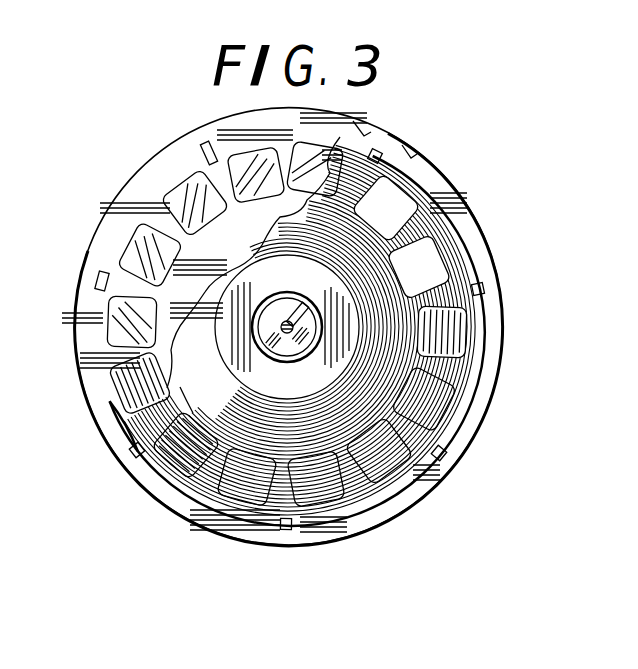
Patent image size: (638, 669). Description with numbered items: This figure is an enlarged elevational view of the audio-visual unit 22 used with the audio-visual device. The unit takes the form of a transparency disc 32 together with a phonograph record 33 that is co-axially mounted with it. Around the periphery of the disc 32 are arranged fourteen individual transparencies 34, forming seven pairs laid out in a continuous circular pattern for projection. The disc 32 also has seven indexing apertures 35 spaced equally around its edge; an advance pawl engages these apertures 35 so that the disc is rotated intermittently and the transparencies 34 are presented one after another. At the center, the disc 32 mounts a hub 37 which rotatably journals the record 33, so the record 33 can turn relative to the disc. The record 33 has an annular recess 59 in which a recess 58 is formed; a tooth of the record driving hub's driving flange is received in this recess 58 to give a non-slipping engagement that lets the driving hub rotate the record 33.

The motor stator assembly 22 is at (140, 162).
The disc 32 is at (472, 240).
The phonograph record 33 is at (108, 424).
The transparencies 34 is at (253, 160).
The indexing apertures 35 is at (95, 279).
The hub 37 is at (282, 355).
The recess 58 is at (292, 312).
The annular recess 59 is at (304, 336).